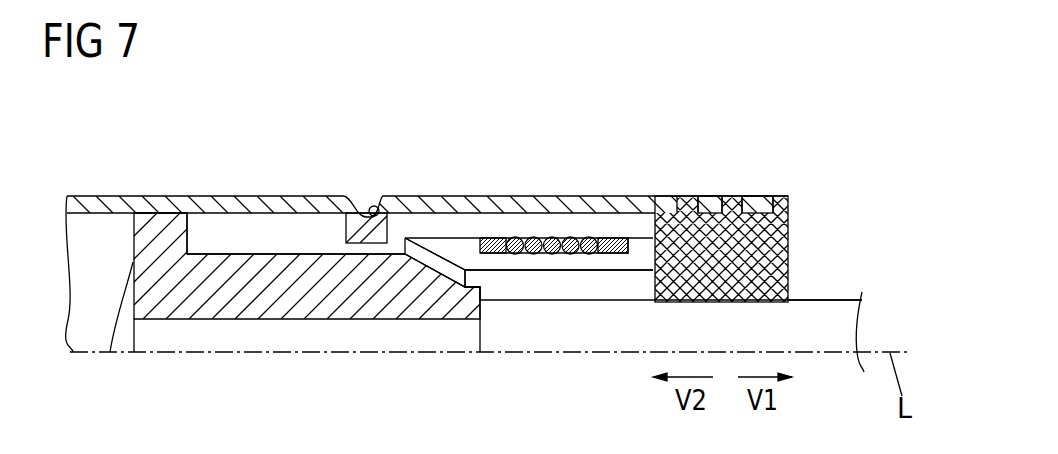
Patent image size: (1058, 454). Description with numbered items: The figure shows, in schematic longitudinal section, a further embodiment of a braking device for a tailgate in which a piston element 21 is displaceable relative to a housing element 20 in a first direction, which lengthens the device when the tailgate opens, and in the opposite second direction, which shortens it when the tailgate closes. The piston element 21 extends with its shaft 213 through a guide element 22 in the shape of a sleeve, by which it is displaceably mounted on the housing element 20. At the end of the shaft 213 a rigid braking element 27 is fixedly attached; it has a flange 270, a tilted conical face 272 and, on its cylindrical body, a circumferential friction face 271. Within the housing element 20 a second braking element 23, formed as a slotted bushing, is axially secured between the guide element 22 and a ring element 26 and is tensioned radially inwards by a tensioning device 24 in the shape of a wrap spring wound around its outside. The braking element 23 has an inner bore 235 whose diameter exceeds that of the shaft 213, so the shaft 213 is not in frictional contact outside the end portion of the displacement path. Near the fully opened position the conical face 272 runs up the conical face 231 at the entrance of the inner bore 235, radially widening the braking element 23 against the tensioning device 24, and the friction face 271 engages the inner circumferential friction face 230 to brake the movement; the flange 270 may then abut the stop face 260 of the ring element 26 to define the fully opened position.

The housing element 20 is at (612, 208).
The piston element 21 is at (848, 303).
The guide element 22 is at (790, 243).
The braking element 23 is at (463, 252).
The tensioning device 24 is at (534, 240).
The ring element 26 is at (373, 206).
The braking element 27 is at (212, 300).
The shaft 213 is at (808, 317).
The inner circumferential friction face 230 is at (601, 272).
The conical face 231 is at (435, 238).
The inner bore 235 is at (540, 293).
The stop face 260 is at (337, 218).
The flange 270 is at (160, 223).
The friction face 271 is at (281, 240).
The conical face 272 is at (452, 283).